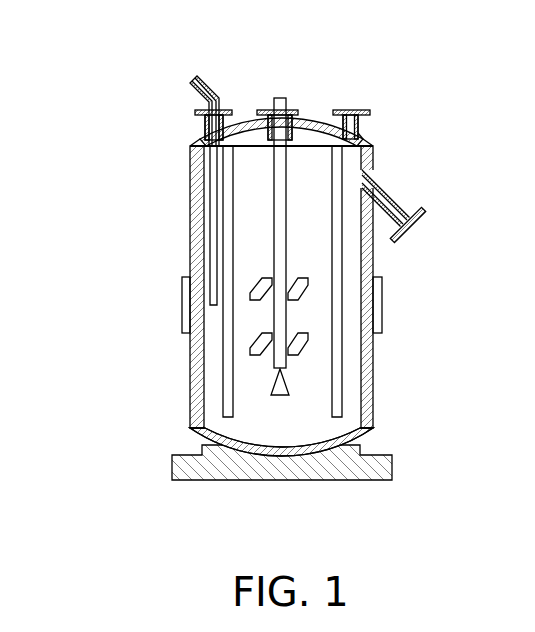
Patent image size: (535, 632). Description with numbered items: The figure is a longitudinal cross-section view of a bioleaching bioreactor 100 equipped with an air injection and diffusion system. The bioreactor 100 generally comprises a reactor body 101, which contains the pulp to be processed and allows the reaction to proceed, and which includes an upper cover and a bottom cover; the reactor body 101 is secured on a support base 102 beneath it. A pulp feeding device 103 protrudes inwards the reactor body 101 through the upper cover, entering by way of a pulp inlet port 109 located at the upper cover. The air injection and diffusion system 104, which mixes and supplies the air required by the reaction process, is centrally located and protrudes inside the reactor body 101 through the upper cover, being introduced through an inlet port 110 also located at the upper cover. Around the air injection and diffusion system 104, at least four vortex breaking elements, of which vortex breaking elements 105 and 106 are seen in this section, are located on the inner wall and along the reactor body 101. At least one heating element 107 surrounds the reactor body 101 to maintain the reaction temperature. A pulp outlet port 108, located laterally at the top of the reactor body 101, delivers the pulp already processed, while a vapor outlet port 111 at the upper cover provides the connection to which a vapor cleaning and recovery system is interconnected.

The bioleaching bioreactor 100 is at (177, 230).
The reactor body 101 is at (367, 383).
The support base 102 is at (303, 470).
The pulp feeding device 103 is at (190, 86).
The air injection and diffusion system 104 is at (272, 160).
The vortex breaking element 105 is at (228, 392).
The vortex breaking element 106 is at (340, 347).
The heating element 107 is at (182, 305).
The pulp outlet port 108 is at (410, 227).
The pulp inlet port 109 is at (195, 112).
The inlet port 110 is at (300, 113).
The vapor outlet port 111 is at (372, 110).